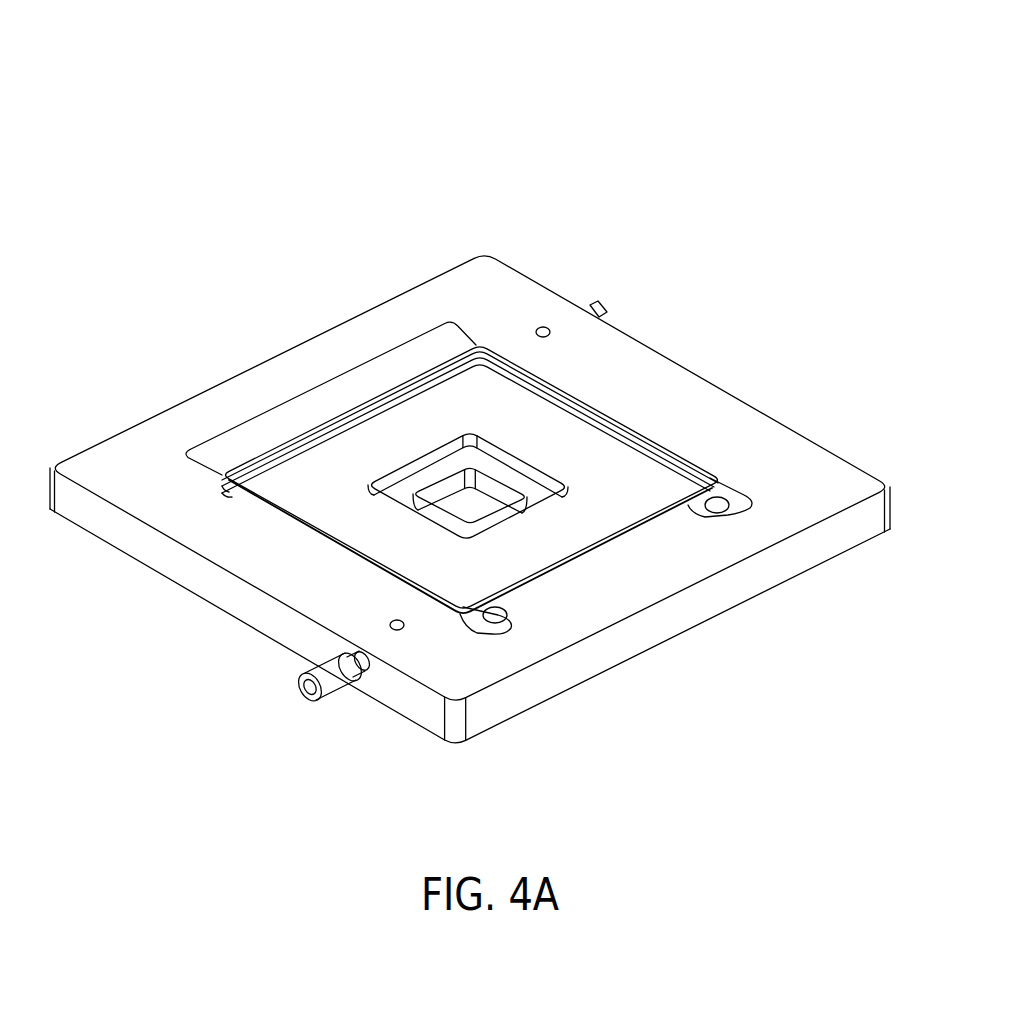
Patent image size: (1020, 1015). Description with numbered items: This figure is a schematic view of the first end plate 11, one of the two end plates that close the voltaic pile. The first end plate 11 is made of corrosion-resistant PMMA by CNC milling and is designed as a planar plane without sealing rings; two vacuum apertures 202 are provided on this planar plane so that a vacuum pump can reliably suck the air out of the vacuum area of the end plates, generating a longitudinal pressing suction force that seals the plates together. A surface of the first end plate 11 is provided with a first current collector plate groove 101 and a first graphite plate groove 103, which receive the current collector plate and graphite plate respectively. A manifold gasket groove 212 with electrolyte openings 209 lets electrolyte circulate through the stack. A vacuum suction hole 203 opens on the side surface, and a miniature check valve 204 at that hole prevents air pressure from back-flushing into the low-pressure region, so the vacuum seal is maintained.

The first end plate 11 is at (481, 117).
The first current collector plate groove 101 is at (535, 492).
The first graphite plate groove 103 is at (640, 487).
The vacuum aperture 202 is at (549, 330).
The vacuum suction hole 203 is at (356, 677).
The miniature check valve 204 is at (604, 311).
The electrolyte opening 209 is at (508, 617).
The manifold gasket groove 212 is at (253, 437).